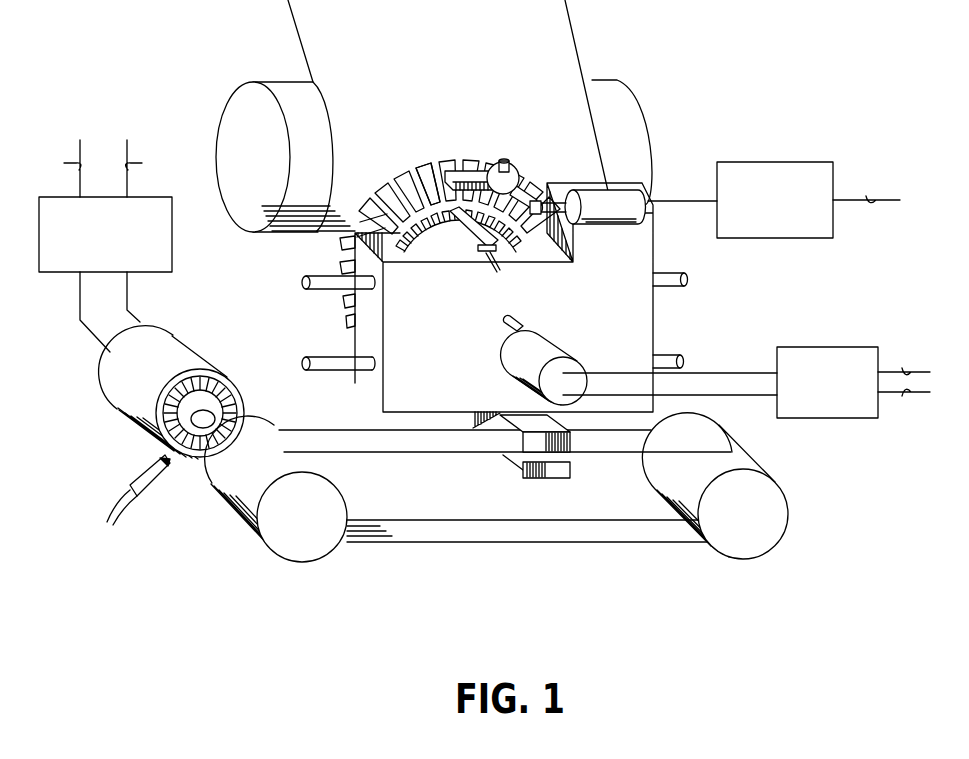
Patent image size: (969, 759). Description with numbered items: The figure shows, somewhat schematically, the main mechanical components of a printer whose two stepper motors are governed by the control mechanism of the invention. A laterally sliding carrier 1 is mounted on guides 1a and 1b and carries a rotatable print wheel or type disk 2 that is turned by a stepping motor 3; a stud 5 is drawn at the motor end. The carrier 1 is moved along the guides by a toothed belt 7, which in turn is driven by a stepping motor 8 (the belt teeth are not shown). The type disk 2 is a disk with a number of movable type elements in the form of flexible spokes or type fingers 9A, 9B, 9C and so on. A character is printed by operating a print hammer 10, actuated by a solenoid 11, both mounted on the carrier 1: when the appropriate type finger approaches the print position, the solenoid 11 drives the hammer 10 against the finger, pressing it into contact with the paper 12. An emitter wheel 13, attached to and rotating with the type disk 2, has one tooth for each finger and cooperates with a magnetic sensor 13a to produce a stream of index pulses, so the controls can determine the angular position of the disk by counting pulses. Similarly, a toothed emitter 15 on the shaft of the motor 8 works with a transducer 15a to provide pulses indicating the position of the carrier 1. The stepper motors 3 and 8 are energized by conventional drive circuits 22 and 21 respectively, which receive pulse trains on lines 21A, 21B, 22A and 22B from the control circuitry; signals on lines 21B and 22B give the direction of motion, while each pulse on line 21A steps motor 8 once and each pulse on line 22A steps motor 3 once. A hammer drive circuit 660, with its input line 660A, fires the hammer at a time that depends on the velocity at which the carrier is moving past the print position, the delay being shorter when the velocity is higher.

The carrier 1 is at (622, 261).
The guide 1a is at (307, 293).
The guide 1b is at (330, 357).
The type disk 2 is at (455, 165).
The stepping motor 3 is at (555, 348).
The disk shaft stud 5 is at (500, 327).
The toothed belt 7 is at (340, 433).
The stepping motor 8 is at (188, 348).
The type finger 9A is at (384, 184).
The type finger 9B is at (403, 171).
The type finger 9C is at (430, 158).
The print hammer 10 is at (523, 170).
The solenoid 11 is at (588, 190).
The paper 12 is at (582, 66).
The emitter wheel 13 is at (438, 231).
The magnetic sensor 13a is at (497, 246).
The toothed emitter 15 is at (223, 397).
The transducer 15a is at (138, 490).
The drive circuit 21 is at (172, 240).
The line 21A is at (59, 168).
The line 21B is at (148, 168).
The drive circuit 22 is at (830, 347).
The line 22A is at (904, 355).
The line 22B is at (904, 408).
The hammer drive circuit 660 is at (787, 162).
The hammer drive input line 660A is at (866, 185).